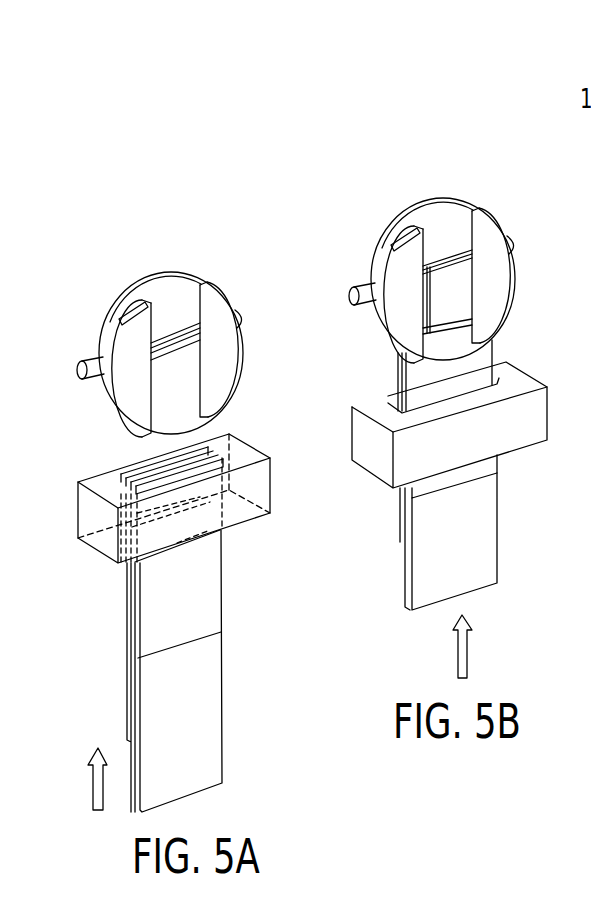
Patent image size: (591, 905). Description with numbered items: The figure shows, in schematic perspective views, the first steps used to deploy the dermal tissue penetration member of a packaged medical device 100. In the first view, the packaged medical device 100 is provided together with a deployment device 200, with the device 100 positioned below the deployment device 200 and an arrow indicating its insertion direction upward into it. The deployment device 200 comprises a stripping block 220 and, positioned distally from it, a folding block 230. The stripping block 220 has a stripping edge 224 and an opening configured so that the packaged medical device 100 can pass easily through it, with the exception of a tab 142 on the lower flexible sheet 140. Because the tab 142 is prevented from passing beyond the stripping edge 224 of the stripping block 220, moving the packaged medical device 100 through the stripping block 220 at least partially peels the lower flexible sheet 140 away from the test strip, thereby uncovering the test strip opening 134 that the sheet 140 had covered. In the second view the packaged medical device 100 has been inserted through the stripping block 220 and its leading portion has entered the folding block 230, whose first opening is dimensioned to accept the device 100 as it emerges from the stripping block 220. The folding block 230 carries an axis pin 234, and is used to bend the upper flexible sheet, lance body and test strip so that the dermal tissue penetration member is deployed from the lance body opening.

In FIG. 5A, the packaged medical device 100 is at (225, 730).
In FIG. 5B, the packaged medical device 100 is at (505, 560).
In FIG. 5B, the test strip opening 134 is at (440, 323).
In FIG. 5B, the lower flexible sheet 140 is at (495, 350).
In FIG. 5A, the tab 142 is at (143, 563).
In FIG. 5B, the tab 142 is at (463, 475).
In FIG. 5A, the deployment device 200 is at (228, 251).
In FIG. 5A, the stripping block 220 is at (74, 521).
In FIG. 5A, the stripping edge 224 is at (183, 540).
In FIG. 5A, the folding block 230 is at (151, 257).
In FIG. 5B, the folding block 230 is at (457, 185).
In FIG. 5B, the axis pin 234 is at (352, 301).